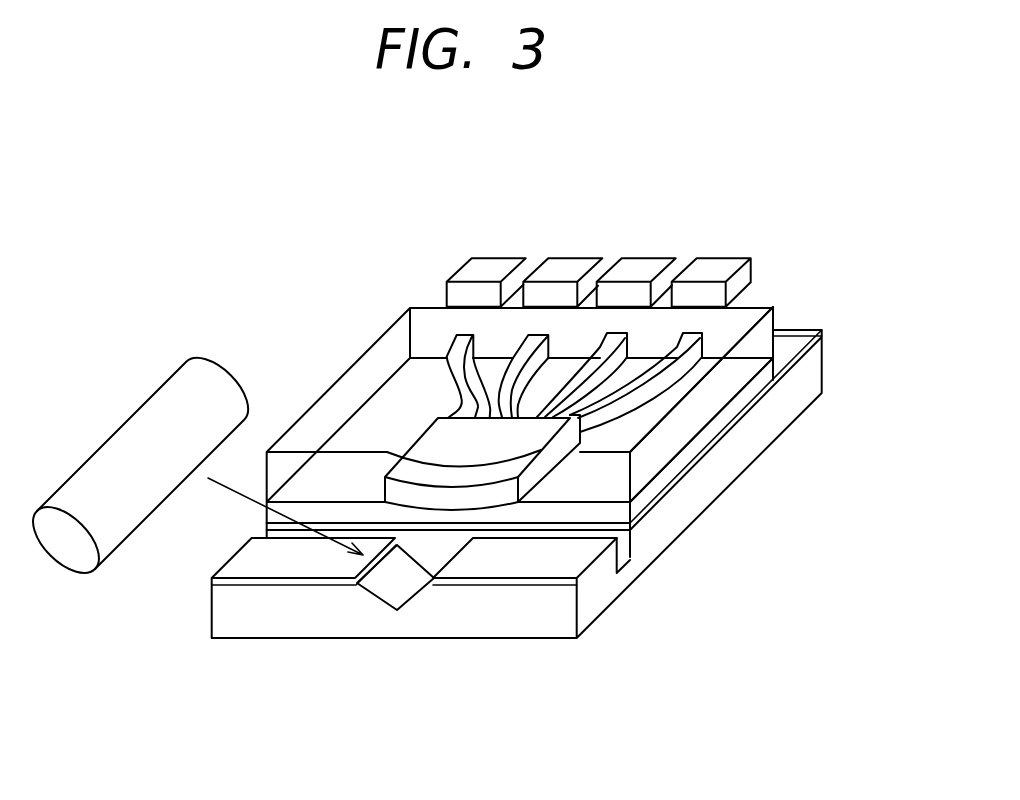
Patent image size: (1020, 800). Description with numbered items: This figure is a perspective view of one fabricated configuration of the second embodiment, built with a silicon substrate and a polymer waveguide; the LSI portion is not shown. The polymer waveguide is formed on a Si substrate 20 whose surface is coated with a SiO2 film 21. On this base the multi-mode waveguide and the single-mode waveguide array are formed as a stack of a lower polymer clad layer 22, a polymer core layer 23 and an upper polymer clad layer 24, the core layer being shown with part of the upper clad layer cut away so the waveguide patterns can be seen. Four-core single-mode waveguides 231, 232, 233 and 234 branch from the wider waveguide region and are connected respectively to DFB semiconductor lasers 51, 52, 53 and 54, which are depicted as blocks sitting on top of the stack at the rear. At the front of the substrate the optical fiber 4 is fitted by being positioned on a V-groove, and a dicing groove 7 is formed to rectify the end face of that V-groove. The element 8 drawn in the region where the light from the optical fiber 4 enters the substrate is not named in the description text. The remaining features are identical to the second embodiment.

The optical fiber 4 is at (155, 400).
The dicing groove 7 is at (622, 552).
The mirror 8 is at (403, 590).
The Si substrate 20 is at (670, 525).
The SiO2 film 21 is at (792, 340).
The lower polymer clad layer 22 is at (703, 437).
The polymer core layer 23 is at (433, 443).
The upper polymer clad layer 24 is at (738, 377).
The DFB semiconductor laser 51 is at (495, 260).
The DFB semiconductor laser 52 is at (568, 260).
The DFB semiconductor laser 53 is at (647, 258).
The DFB semiconductor laser 54 is at (718, 260).
The single-mode waveguide 231 is at (453, 348).
The single-mode waveguide 232 is at (522, 348).
The single-mode waveguide 233 is at (615, 342).
The single-mode waveguide 234 is at (688, 343).